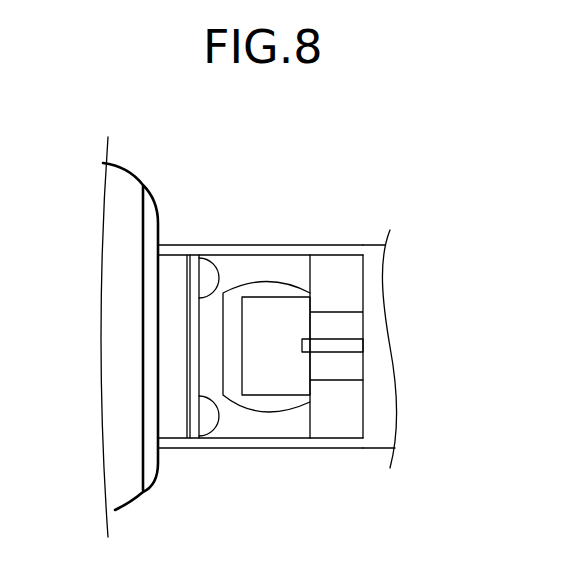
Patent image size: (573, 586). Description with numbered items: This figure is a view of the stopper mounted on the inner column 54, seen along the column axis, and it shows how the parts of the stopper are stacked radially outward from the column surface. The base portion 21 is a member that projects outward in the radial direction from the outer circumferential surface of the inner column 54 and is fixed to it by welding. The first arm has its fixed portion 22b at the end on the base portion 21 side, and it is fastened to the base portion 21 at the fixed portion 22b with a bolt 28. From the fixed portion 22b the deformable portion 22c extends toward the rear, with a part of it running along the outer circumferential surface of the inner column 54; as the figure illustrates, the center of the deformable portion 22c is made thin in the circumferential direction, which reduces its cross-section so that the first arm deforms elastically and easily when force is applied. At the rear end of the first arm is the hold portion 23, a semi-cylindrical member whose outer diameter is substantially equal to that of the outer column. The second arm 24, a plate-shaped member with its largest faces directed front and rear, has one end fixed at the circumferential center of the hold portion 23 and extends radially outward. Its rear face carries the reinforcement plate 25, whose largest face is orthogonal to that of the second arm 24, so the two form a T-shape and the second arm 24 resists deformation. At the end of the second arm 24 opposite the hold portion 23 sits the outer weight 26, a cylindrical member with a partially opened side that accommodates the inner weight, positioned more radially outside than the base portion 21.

The base portion 21 is at (177, 263).
The fixed portion 22b is at (195, 263).
The deformable portion 22c is at (276, 268).
The hold portion 23 is at (350, 283).
The second arm 24 is at (352, 328).
The reinforcement plate 25 is at (352, 345).
The outer weight 26 is at (280, 382).
The bolt 28 is at (210, 273).
The inner column 54 is at (375, 252).